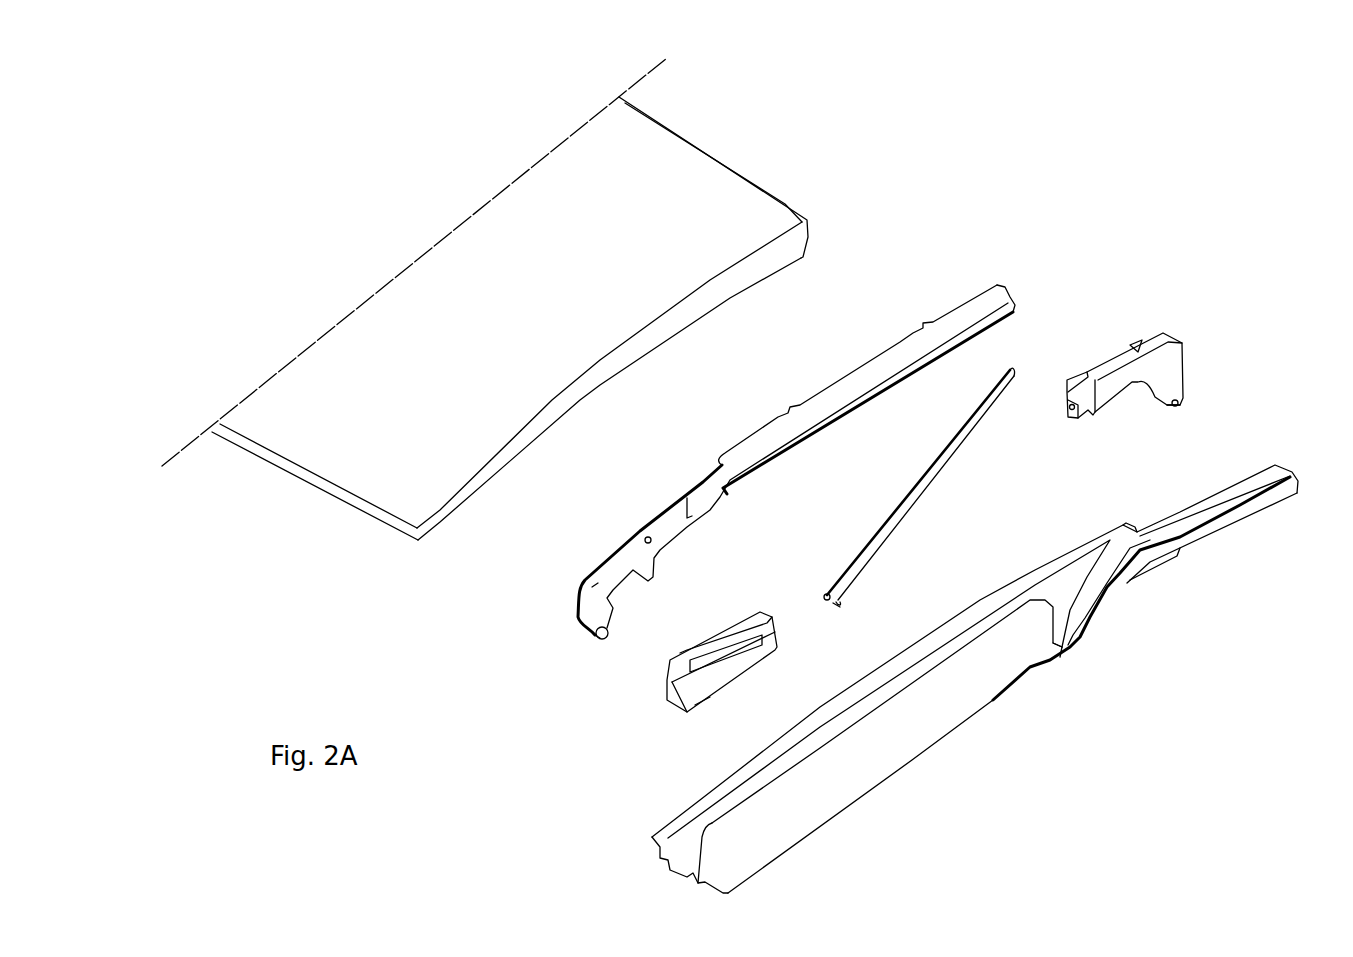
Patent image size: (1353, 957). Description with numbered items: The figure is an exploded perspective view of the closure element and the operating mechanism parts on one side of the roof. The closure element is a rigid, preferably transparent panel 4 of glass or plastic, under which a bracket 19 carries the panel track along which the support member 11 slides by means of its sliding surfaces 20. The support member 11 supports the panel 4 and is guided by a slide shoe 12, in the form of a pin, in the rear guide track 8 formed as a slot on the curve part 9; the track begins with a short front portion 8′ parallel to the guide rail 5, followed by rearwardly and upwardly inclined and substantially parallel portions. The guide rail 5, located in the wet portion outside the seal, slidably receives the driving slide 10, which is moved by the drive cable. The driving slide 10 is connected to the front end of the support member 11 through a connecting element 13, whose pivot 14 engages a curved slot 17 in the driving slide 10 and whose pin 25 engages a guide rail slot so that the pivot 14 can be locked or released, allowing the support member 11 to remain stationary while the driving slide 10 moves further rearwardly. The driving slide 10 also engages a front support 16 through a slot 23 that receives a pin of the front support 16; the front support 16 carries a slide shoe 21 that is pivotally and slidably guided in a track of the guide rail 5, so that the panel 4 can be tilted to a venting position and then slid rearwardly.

The panel 4 is at (510, 293).
The bracket 19 is at (843, 385).
The connecting element 13 is at (1020, 355).
The pivot 14 is at (827, 600).
The pin 25 is at (847, 605).
The support member 11 is at (1167, 373).
The sliding surfaces 20 is at (1136, 348).
The slide shoe 12 is at (1187, 397).
The curve part 9 is at (1253, 473).
The guide rail 5 is at (640, 862).
The rear guide track 8 is at (1197, 538).
The front portion 8′ is at (1071, 649).
The slot 23 is at (668, 690).
The driving slide 10 is at (670, 713).
The curved slot 17 is at (710, 697).
The front support 16 is at (592, 587).
The slide shoe 21 is at (592, 635).